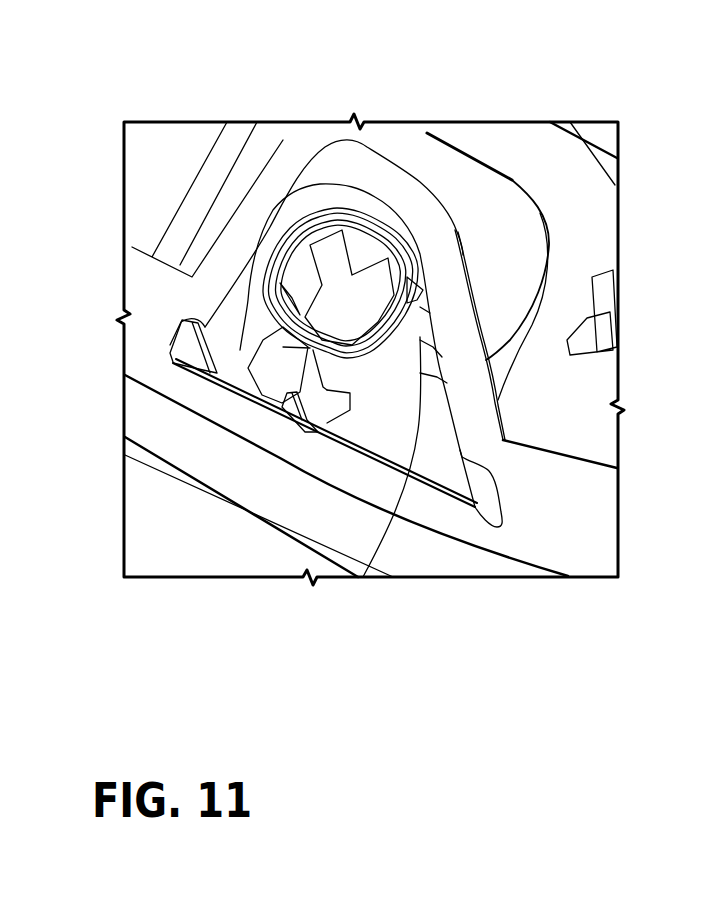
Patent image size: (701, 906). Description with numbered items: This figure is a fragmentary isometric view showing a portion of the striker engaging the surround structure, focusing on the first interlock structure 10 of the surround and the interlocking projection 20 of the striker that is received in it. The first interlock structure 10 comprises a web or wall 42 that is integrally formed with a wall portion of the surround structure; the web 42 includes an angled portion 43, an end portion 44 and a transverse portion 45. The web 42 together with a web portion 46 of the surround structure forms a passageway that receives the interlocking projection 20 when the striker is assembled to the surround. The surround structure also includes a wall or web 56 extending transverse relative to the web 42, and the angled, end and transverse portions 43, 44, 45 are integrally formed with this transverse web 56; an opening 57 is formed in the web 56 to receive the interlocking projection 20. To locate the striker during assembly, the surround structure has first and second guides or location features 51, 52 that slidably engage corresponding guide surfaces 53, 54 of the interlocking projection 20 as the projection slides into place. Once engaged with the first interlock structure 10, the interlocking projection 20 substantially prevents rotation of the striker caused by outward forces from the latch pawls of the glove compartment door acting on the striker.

The first interlock structure 10 is at (508, 405).
The interlocking projection 20 is at (365, 257).
The web or wall 42 is at (434, 182).
The angled portion 43 is at (440, 236).
The end portion 44 is at (297, 162).
The transverse portion 45 is at (237, 196).
The web portion 46 is at (422, 515).
The first guide or location feature 51 is at (345, 388).
The second guide or location feature 52 is at (425, 345).
The guide surface 53 is at (297, 343).
The guide surface 54 is at (405, 302).
The wall or web 56 is at (348, 392).
The opening 57 is at (372, 410).